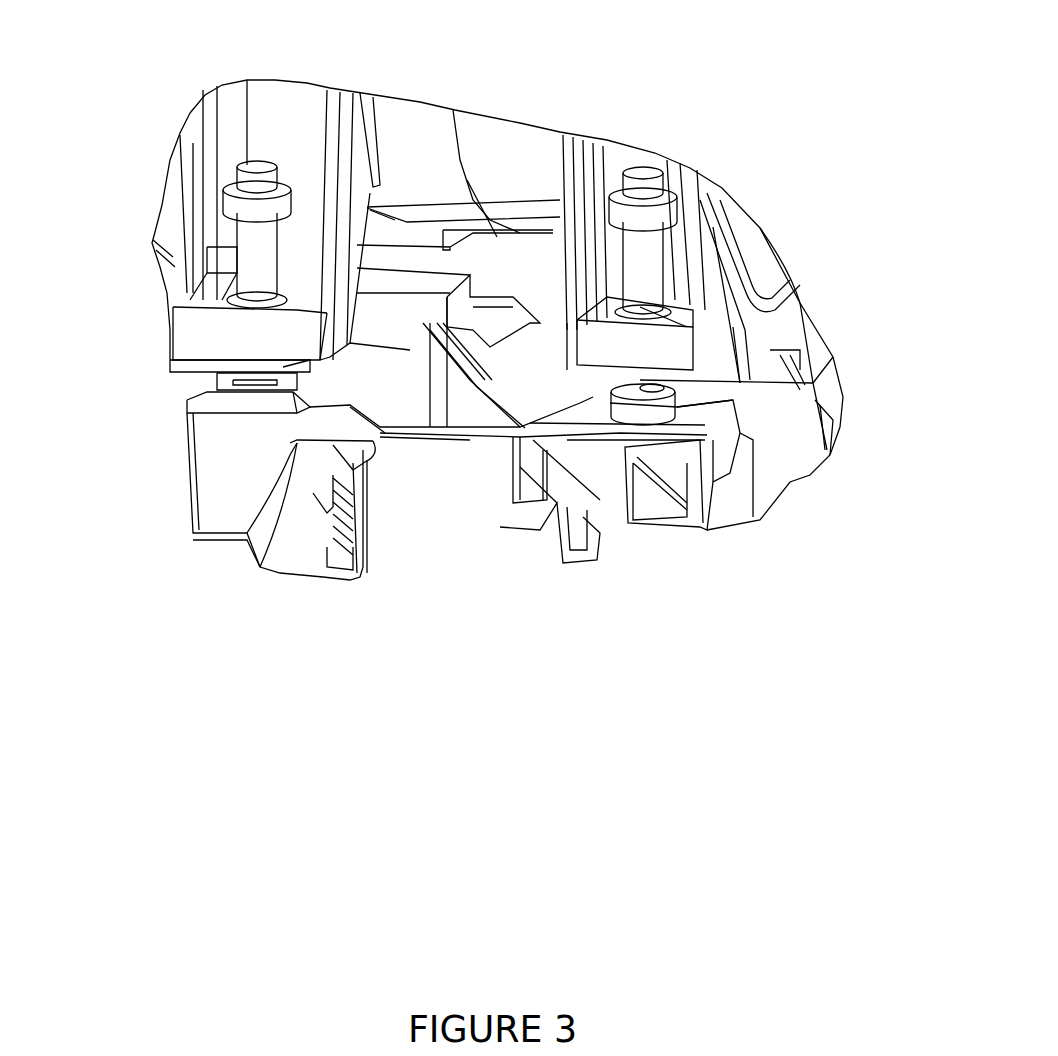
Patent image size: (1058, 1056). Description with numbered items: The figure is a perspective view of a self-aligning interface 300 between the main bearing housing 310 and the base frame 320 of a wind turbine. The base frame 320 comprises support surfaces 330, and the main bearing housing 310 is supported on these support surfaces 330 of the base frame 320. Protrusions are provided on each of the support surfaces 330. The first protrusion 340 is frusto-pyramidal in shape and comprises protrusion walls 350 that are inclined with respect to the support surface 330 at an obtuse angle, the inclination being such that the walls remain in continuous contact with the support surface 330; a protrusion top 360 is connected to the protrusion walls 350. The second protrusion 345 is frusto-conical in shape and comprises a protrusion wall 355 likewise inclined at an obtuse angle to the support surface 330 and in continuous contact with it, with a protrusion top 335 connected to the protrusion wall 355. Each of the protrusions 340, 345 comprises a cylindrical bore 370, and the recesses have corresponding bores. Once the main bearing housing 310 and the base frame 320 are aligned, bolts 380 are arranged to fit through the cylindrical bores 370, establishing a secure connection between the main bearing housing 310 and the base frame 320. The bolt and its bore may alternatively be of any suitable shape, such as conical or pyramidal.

The self-aligning interface 300 is at (905, 400).
The main bearing housing 310 is at (443, 321).
The base frame 320 is at (232, 509).
The support surfaces 330 is at (508, 523).
The protrusion top 335 is at (769, 322).
The first protrusion 340 is at (200, 459).
The second protrusion 345 is at (724, 478).
The protrusion walls 350 is at (186, 417).
The protrusion wall 355 is at (753, 441).
The protrusion top 360 is at (191, 383).
The cylindrical bore 370 is at (458, 283).
The bolts 380 is at (452, 202).